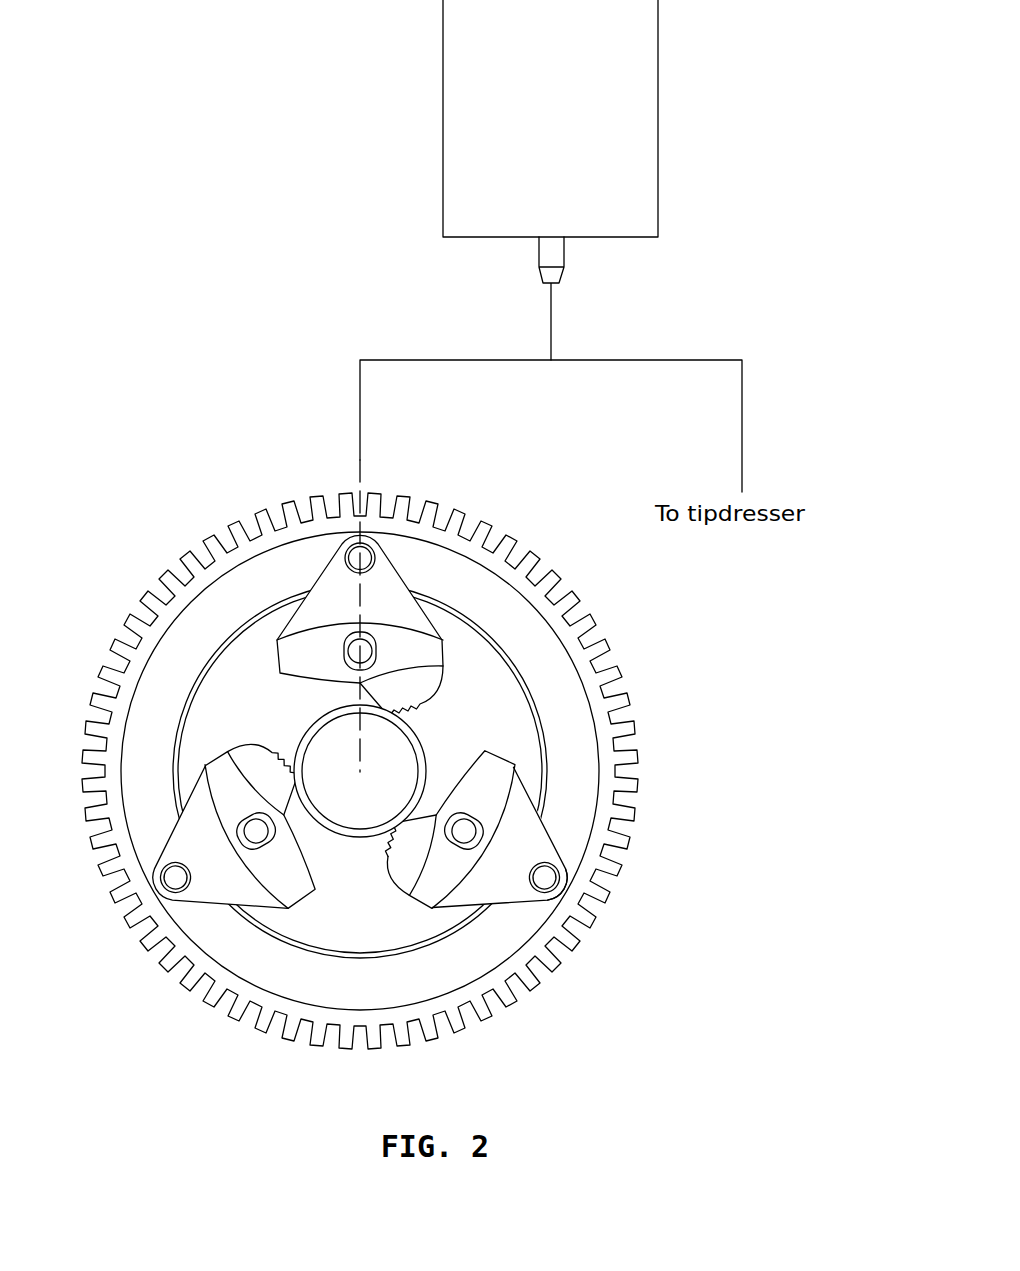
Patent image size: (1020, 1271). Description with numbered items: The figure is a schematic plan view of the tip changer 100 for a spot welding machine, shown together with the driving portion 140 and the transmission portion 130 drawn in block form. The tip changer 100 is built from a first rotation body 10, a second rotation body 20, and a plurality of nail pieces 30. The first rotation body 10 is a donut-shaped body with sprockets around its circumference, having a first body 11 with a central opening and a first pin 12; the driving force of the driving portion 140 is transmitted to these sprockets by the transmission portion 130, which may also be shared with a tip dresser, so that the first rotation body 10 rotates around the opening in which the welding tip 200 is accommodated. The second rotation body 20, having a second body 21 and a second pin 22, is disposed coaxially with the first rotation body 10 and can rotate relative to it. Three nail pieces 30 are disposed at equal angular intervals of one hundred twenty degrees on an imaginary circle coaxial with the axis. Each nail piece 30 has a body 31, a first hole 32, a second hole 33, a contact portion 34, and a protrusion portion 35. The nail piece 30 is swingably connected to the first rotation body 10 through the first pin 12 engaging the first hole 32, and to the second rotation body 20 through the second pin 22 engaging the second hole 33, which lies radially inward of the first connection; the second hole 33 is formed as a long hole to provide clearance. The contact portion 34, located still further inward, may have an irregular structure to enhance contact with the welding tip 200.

The tip changer 100 is at (395, 774).
The welding tip 200 is at (323, 748).
The first rotation body 10 is at (406, 771).
The first body 11 is at (577, 830).
The first pin 12 is at (549, 879).
The second rotation body 20 is at (436, 771).
The second body 21 is at (510, 725).
The second pin 22 is at (465, 832).
The nail piece 30 is at (422, 818).
The body 31 is at (507, 912).
The first hole 32 is at (557, 932).
The second hole 33 is at (438, 894).
The contact portion 34 is at (397, 843).
The protrusion portion 35 is at (405, 865).
The transmission portion 130 is at (551, 566).
The driving portion 140 is at (550, 180).